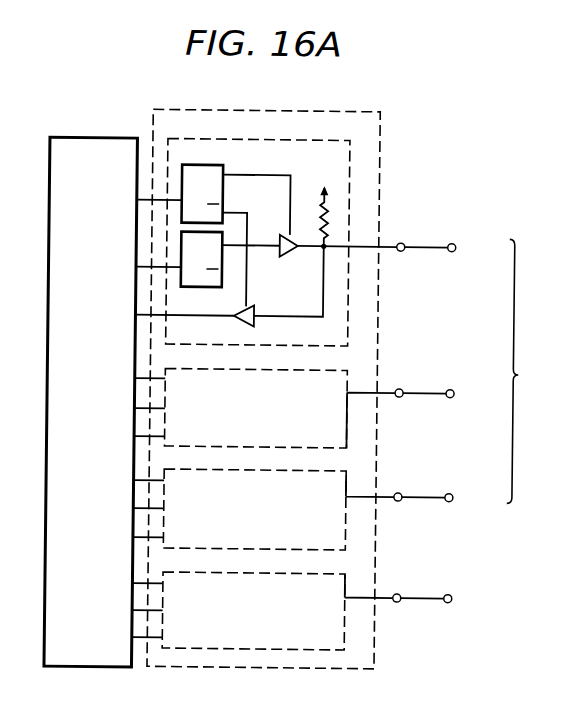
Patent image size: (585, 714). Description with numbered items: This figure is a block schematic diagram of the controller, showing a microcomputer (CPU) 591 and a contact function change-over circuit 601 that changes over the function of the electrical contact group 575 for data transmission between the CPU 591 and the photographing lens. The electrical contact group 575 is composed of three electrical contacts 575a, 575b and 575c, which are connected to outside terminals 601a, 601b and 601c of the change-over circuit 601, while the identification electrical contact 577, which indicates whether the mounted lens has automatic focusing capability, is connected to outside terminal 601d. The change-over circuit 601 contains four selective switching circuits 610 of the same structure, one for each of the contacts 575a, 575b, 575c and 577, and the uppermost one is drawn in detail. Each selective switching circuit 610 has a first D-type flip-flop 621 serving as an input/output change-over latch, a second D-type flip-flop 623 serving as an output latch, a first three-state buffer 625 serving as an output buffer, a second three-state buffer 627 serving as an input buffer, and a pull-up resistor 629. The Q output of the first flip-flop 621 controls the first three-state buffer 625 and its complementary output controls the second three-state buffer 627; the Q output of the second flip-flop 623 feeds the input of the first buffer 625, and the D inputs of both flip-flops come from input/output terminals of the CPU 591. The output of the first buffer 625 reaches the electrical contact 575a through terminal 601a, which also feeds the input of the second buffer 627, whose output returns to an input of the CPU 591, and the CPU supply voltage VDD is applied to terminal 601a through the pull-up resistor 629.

The microcomputer (CPU) 591 is at (86, 141).
The contact function change-over circuit 601 is at (344, 106).
The selective switching circuit 610 is at (311, 140).
The first D-type flip-flop circuit 621 is at (220, 167).
The second D-type flip-flop circuit 623 is at (217, 289).
The first three-state buffer 625 is at (278, 240).
The second three-state buffer 627 is at (254, 314).
The pull-up resistor 629 is at (320, 217).
The outside terminal 601a is at (400, 242).
The outside terminal 601b is at (400, 388).
The outside terminal 601c is at (400, 492).
The outside terminal 601d is at (400, 593).
The electrical contact 575a is at (452, 250).
The electrical contact 575b is at (452, 396).
The electrical contact 575c is at (452, 500).
The electrical contact group 575 is at (531, 371).
The identification electrical contact 577 is at (452, 601).